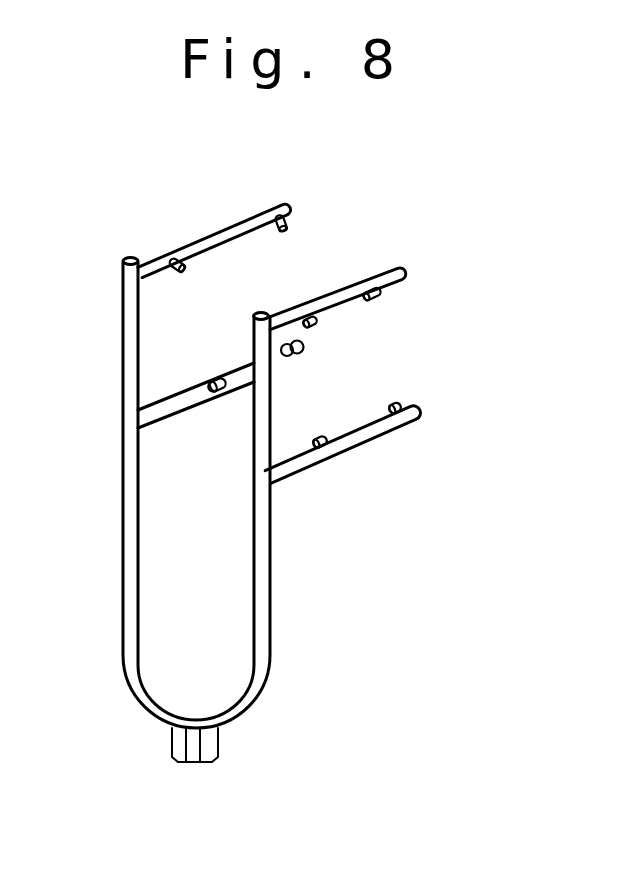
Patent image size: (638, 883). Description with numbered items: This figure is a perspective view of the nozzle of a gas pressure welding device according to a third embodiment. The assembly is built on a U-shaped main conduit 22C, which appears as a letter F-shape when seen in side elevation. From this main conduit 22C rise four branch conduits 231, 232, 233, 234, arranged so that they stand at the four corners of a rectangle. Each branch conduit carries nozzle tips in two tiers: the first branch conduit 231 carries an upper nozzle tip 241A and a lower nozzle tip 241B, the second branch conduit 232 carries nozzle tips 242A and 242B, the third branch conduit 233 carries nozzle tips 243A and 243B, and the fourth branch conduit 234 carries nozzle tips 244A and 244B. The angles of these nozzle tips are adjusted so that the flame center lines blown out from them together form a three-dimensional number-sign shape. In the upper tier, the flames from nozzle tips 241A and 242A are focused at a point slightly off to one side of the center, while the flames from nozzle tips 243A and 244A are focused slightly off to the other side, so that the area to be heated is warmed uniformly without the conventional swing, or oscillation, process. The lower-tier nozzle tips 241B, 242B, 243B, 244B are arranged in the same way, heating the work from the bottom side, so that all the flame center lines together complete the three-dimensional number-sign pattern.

The U-shaped main conduit 22C is at (262, 663).
The branch conduit 231 is at (358, 437).
The branch conduit 232 is at (372, 278).
The branch conduit 233 is at (220, 232).
The branch conduit 234 is at (170, 408).
The nozzle tip 241A is at (398, 404).
The nozzle tip 241B is at (320, 440).
The nozzle tip 242A is at (384, 296).
The nozzle tip 242B is at (316, 326).
The nozzle tip 243A is at (284, 232).
The nozzle tip 243B is at (178, 274).
The nozzle tip 244A is at (304, 356).
The nozzle tip 244B is at (212, 375).